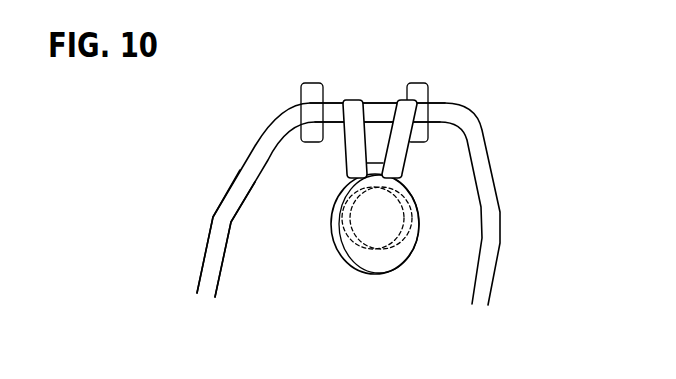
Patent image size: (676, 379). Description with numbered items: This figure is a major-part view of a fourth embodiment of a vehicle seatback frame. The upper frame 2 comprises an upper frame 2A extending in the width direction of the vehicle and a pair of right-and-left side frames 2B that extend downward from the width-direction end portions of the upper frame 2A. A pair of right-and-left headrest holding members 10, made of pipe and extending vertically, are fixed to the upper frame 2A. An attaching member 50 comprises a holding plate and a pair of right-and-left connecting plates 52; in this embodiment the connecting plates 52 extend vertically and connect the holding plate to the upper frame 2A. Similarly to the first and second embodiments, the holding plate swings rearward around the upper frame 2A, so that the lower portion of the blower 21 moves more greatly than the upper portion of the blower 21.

The upper frame 2 is at (492, 249).
The upper frame 2A is at (378, 108).
The side frames 2B is at (216, 233).
The headrest holding members 10 is at (312, 87).
The blower 21 is at (385, 236).
The attaching member 50 is at (370, 258).
The connecting plates 52 is at (353, 150).